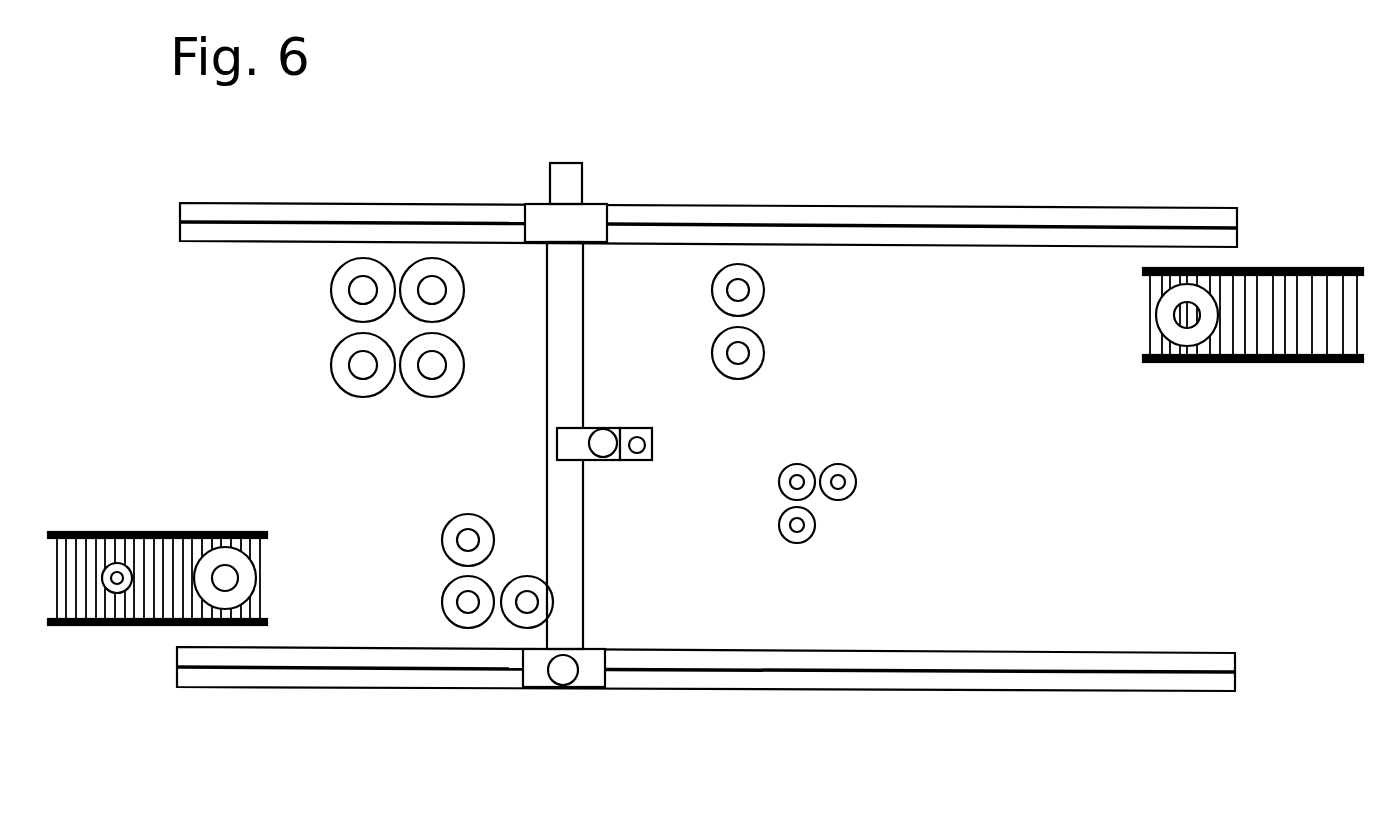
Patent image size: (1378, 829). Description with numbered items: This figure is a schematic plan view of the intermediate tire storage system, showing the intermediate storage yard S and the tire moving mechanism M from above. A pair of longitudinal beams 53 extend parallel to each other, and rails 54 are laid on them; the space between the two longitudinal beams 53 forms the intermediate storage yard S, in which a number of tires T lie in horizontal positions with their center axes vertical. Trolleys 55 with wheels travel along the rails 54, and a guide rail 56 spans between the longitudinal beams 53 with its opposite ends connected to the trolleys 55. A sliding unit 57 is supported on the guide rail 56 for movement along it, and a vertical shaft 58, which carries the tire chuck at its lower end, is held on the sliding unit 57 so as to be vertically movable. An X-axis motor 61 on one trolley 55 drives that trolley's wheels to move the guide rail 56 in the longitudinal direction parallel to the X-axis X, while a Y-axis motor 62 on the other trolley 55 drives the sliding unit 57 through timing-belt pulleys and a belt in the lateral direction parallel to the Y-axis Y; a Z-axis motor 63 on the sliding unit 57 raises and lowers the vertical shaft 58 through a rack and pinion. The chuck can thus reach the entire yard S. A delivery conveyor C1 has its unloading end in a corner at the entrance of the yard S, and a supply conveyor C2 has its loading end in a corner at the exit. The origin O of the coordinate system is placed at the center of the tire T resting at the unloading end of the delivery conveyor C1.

The longitudinal beam 53 is at (793, 205).
The rail 54 is at (918, 223).
The trolley 55 is at (542, 217).
The guide rail 56 is at (572, 355).
The sliding unit 57 is at (572, 447).
The vertical shaft 58 is at (640, 453).
The X-axis motor 61 is at (585, 175).
The Y-axis motor 62 is at (563, 675).
The Z-axis motor 63 is at (604, 430).
The tire moving mechanism M is at (722, 178).
The intermediate storage yard S is at (742, 453).
The tire T is at (332, 355).
The delivery conveyor C1 is at (102, 532).
The supply conveyor C2 is at (1252, 362).
The X-axis X is at (225, 578).
The Y-axis Y is at (225, 578).
The origin O is at (216, 594).